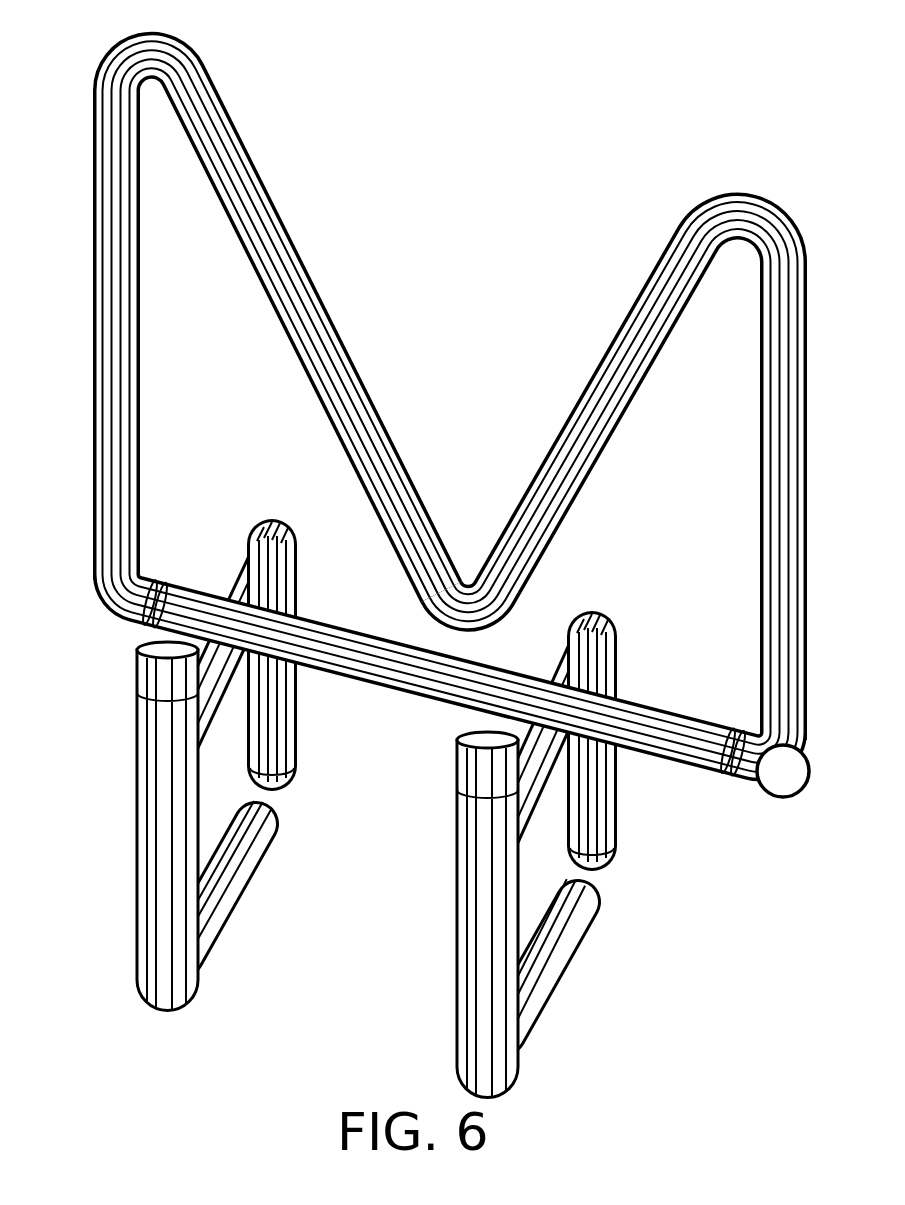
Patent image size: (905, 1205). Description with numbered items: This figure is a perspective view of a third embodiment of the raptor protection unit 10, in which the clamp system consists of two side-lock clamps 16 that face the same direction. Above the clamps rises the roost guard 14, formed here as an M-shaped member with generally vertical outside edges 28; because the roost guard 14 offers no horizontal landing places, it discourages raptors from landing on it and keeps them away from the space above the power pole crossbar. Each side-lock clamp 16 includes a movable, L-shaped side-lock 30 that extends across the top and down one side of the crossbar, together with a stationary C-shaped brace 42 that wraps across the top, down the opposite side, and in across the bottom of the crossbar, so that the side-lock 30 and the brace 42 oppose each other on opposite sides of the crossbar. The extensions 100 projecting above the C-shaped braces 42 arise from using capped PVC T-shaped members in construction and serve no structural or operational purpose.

The raptor protection unit 10 is at (436, 569).
The roost guard 14 is at (449, 451).
The vertical outside edges 28 is at (304, 263).
The L-shaped side-lock 30 is at (278, 519).
The extensions 100 is at (155, 741).
The C-shaped brace 42 is at (377, 869).
The side-lock clamps 16 is at (290, 808).